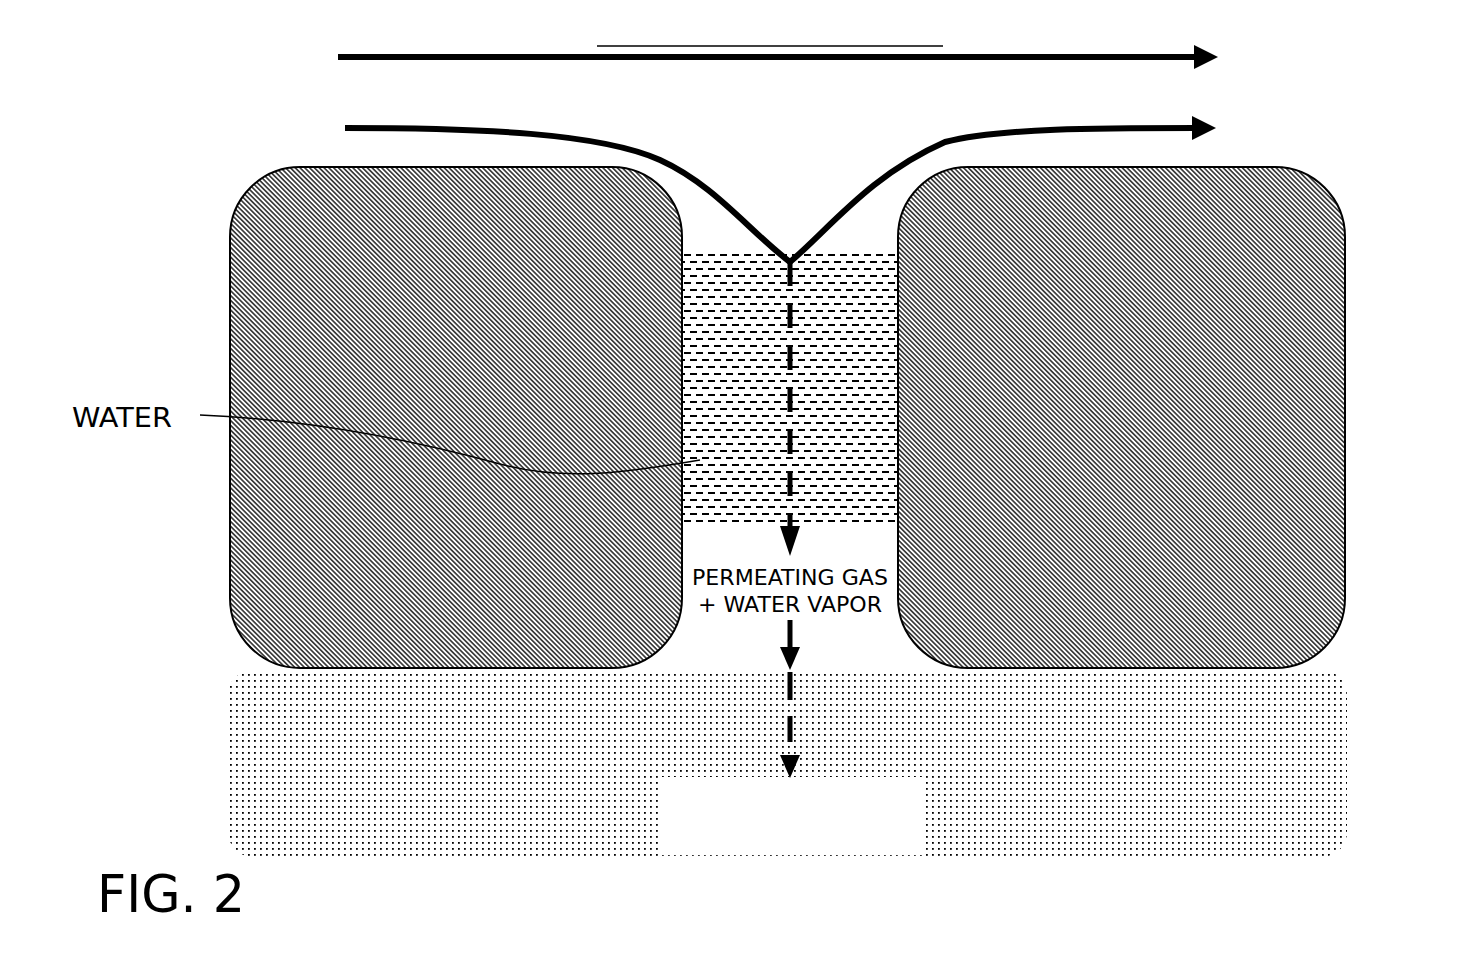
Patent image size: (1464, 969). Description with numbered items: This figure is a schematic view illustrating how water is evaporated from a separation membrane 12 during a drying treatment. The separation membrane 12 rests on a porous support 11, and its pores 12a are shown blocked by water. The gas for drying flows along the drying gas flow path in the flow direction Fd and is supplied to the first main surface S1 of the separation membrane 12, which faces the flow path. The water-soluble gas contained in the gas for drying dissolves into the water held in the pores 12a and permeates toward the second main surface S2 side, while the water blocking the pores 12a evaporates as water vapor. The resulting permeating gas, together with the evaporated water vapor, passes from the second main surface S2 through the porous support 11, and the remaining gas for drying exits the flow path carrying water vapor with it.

The porous support 11 is at (1347, 771).
The separation membrane 12 is at (1345, 407).
The pores 12a is at (822, 206).
The first main surface S1 is at (362, 165).
The second main surface S2 is at (302, 685).
The flow direction Fd is at (995, 48).